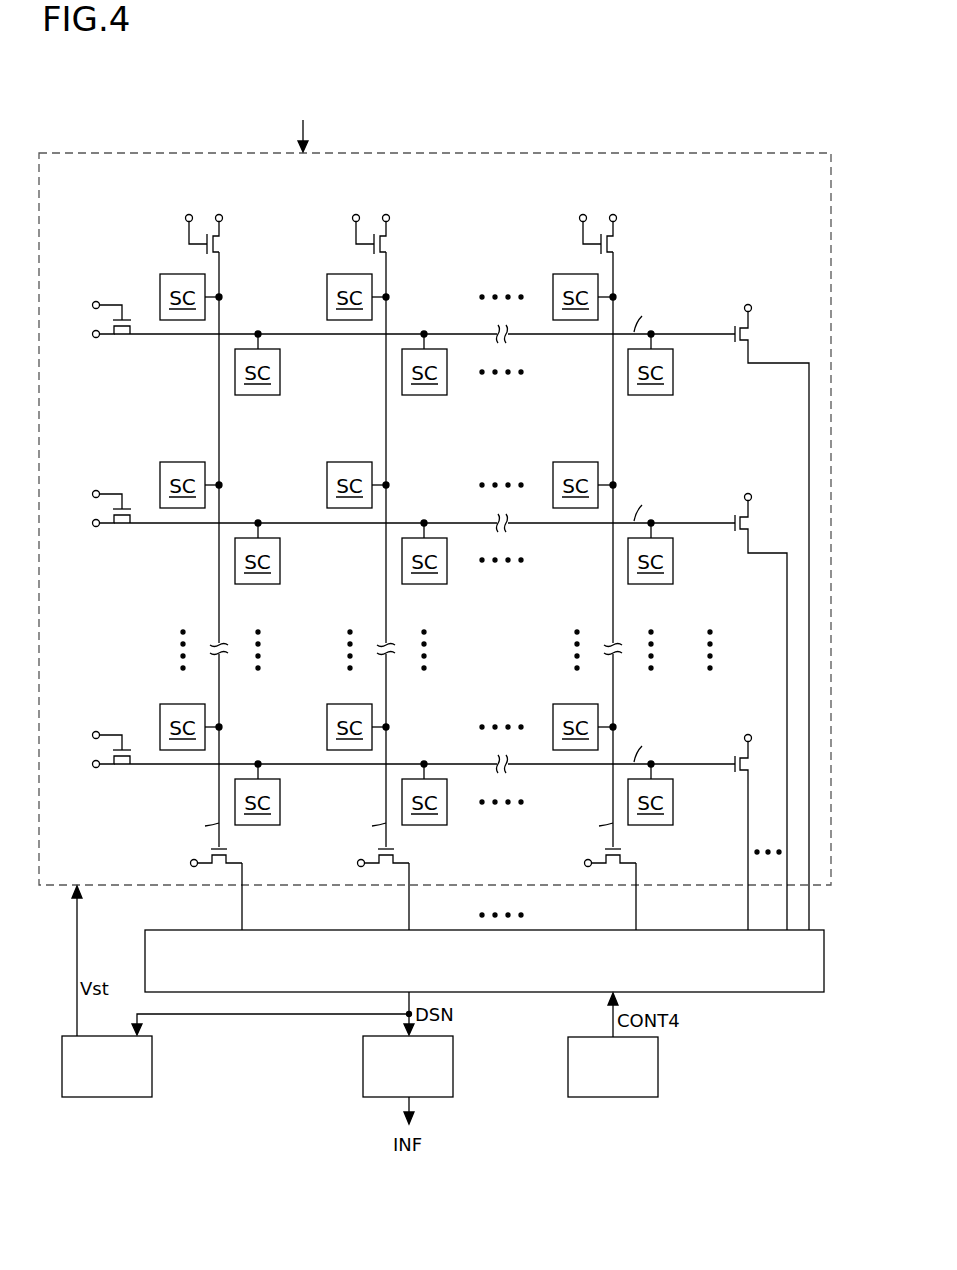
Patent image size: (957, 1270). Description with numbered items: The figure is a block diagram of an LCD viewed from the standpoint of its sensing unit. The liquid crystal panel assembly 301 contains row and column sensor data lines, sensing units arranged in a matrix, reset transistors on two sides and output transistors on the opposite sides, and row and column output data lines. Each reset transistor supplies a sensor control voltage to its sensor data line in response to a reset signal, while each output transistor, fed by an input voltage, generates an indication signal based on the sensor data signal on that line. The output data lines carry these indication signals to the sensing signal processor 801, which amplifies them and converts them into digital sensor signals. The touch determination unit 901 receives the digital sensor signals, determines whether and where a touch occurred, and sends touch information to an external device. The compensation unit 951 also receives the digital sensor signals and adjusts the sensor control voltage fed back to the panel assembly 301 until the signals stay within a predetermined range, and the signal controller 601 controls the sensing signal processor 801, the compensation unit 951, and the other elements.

The liquid crystal panel assembly 301 is at (547, 150).
The sensing signal processor 801 is at (196, 967).
The touch determination unit 901 is at (409, 1069).
The compensation unit 951 is at (108, 1069).
The signal controller 601 is at (614, 1069).